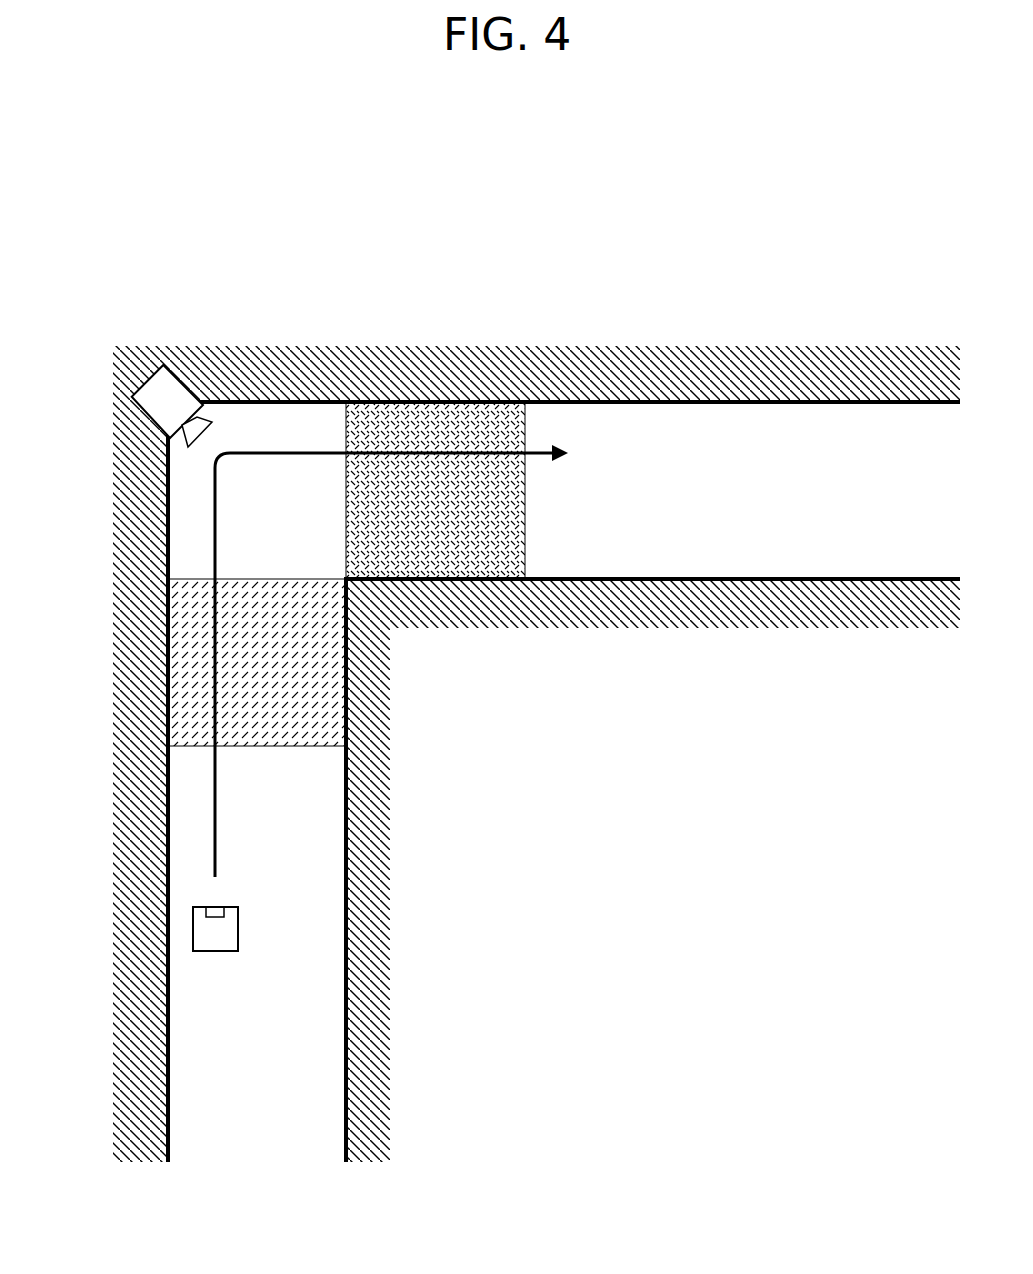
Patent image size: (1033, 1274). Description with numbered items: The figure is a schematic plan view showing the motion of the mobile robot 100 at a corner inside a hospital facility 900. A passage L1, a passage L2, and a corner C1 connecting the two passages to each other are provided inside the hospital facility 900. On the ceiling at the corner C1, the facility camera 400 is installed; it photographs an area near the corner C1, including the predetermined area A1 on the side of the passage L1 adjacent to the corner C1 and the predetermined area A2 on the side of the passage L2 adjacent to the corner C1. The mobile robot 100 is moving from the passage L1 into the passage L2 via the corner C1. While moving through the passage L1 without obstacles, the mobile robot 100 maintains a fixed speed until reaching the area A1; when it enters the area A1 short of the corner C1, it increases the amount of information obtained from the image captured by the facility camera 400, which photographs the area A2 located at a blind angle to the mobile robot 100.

The hospital facility 900 is at (502, 644).
The facility camera 400 is at (170, 392).
The predetermined area A2 is at (447, 425).
The passage L2 is at (786, 425).
The corner C1 is at (185, 510).
The predetermined area A1 is at (185, 680).
The passage L1 is at (185, 1057).
The mobile robot 100 is at (216, 907).